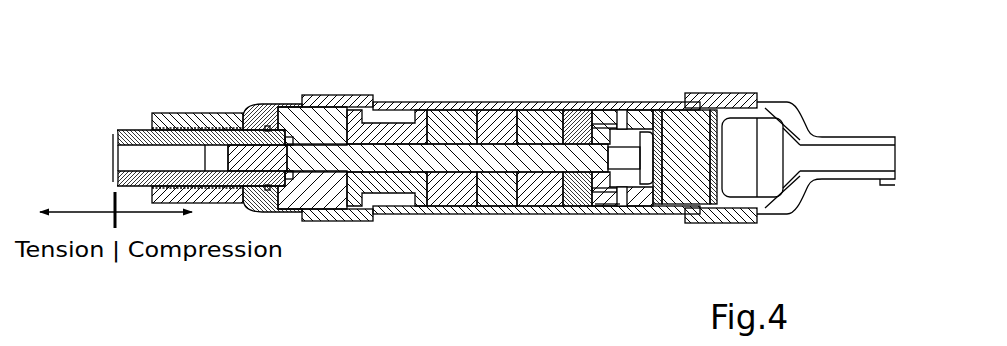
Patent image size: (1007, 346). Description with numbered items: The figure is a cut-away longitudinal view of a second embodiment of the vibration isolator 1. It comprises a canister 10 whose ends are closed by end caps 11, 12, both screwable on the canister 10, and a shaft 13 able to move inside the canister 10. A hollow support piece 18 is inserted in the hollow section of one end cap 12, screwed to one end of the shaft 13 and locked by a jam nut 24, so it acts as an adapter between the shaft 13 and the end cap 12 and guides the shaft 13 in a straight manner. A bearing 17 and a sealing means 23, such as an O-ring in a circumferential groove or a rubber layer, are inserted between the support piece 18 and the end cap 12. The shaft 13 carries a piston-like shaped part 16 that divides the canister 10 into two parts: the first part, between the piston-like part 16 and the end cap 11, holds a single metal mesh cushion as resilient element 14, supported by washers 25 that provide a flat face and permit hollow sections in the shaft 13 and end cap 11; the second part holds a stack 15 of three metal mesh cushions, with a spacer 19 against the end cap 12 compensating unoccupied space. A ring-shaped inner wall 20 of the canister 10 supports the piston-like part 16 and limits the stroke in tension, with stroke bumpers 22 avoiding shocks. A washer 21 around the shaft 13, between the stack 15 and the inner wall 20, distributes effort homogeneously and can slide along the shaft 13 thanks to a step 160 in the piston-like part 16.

The vibration isolator 1 is at (815, 78).
The canister 10 is at (480, 99).
The end cap 11 is at (804, 193).
The end cap 12 is at (196, 111).
The shaft 13 is at (410, 168).
The resilient element 14 is at (681, 134).
The resilient and damping elements 15 is at (508, 192).
The piston-like shaped part 16 is at (622, 137).
The step 160 is at (586, 122).
The bearing 17 is at (219, 206).
The support piece 18 is at (125, 128).
The spacer 19 is at (392, 118).
The inner wall 20 is at (606, 213).
The washer 21 is at (575, 126).
The stroke bumpers 22 is at (626, 208).
The sealing means 23 is at (268, 124).
The jam nut 24 is at (302, 177).
The washers 25 is at (669, 176).